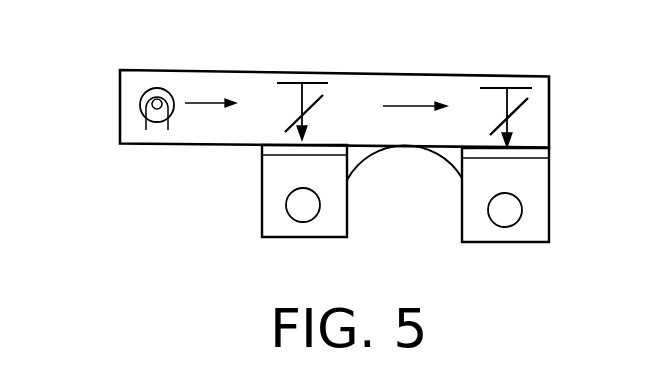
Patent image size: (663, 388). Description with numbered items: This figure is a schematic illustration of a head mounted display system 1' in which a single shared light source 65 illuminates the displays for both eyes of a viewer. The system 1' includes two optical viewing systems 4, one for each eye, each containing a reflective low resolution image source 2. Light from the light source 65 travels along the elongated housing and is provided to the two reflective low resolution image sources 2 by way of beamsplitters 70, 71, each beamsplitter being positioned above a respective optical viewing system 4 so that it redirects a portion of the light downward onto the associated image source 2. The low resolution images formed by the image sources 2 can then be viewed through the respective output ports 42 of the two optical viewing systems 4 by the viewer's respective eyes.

The head mounted display system 1' is at (296, 88).
The low resolution image source 2 is at (288, 83).
The optical viewing system 4 is at (262, 237).
The output port 42 is at (305, 222).
The light source 65 is at (140, 103).
The beamsplitter 70 is at (322, 95).
The beamsplitter 71 is at (528, 100).